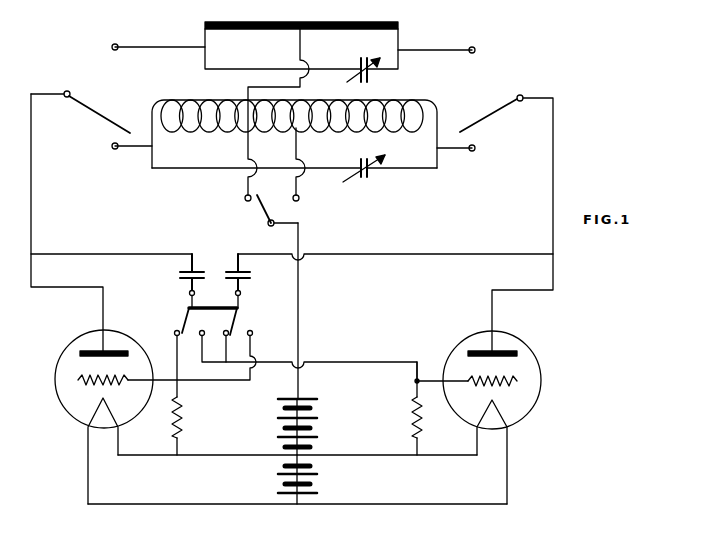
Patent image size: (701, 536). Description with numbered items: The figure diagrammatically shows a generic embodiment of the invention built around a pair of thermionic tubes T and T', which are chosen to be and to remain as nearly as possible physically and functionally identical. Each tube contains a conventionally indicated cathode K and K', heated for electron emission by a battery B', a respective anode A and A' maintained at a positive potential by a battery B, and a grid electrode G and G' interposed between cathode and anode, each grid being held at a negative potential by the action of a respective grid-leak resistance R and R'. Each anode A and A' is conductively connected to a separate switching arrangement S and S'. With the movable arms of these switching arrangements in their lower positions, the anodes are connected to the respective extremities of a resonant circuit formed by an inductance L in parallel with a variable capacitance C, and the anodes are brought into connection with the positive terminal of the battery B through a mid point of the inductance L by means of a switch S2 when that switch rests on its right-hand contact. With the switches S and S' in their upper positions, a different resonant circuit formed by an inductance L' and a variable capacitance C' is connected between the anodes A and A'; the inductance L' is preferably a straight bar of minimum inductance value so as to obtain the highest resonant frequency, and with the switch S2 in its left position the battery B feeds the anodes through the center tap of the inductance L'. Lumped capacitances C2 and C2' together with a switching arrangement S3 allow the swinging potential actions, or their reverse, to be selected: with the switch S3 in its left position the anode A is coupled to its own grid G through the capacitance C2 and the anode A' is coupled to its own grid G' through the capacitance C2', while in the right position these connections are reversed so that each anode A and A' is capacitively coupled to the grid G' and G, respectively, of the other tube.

The inductance L' is at (314, 38).
The variable capacitance C' is at (371, 78).
The inductance L is at (294, 125).
The variable capacitance C is at (369, 178).
The switching arrangement S is at (491, 103).
The switching arrangement S' is at (97, 102).
The switch S2 is at (268, 212).
The lumped capacitance C2' is at (180, 265).
The lumped capacitance C2 is at (241, 265).
The switching arrangement S3 is at (236, 308).
The thermionic tube T' is at (93, 384).
The anode A' is at (95, 337).
The grid electrode G' is at (77, 369).
The cathode K' is at (87, 451).
The grid-leak resistance R' is at (193, 417).
The thermionic tube T is at (497, 386).
The anode A is at (499, 335).
The grid electrode G is at (514, 369).
The cathode K is at (517, 445).
The grid-leak resistance R is at (403, 417).
The battery B is at (308, 427).
The battery B' is at (311, 479).